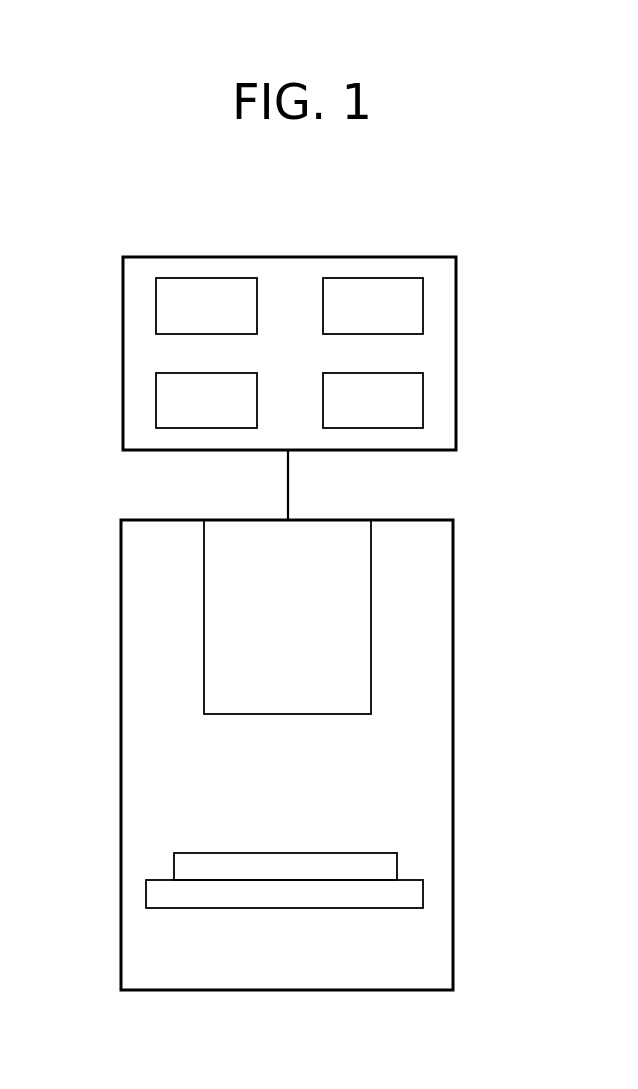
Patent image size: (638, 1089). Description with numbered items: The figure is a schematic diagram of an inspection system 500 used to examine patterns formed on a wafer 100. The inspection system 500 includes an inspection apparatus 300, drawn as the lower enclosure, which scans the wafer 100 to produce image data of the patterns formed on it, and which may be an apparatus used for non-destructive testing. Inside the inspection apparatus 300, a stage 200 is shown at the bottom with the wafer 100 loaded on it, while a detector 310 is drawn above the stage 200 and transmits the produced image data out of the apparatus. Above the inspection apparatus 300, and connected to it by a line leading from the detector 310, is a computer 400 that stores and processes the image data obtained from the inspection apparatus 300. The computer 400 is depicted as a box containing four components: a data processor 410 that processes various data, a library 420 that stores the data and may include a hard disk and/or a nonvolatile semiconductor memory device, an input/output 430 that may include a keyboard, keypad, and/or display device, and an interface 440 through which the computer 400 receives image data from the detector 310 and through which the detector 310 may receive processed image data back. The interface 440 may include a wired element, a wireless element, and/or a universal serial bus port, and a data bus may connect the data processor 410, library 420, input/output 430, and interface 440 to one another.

The inspection system 500 is at (513, 190).
The computer 400 is at (290, 256).
The data processor 410 is at (156, 305).
The library 420 is at (423, 305).
The input/output 430 is at (156, 400).
The interface 440 is at (423, 400).
The inspection apparatus 300 is at (455, 562).
The detector 310 is at (371, 617).
The wafer 100 is at (397, 865).
The stage 200 is at (423, 890).